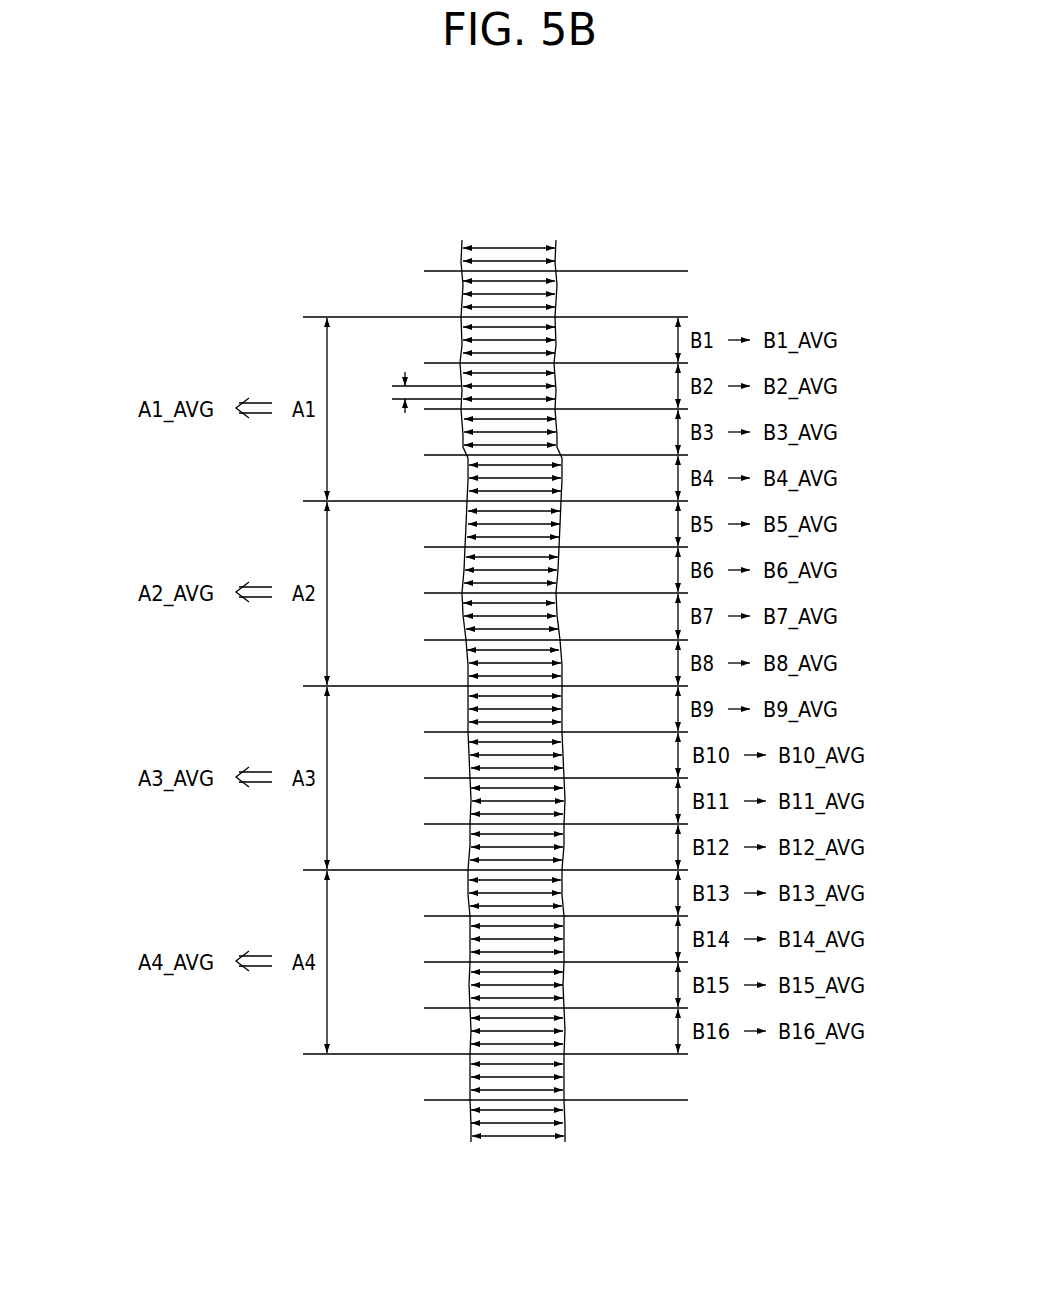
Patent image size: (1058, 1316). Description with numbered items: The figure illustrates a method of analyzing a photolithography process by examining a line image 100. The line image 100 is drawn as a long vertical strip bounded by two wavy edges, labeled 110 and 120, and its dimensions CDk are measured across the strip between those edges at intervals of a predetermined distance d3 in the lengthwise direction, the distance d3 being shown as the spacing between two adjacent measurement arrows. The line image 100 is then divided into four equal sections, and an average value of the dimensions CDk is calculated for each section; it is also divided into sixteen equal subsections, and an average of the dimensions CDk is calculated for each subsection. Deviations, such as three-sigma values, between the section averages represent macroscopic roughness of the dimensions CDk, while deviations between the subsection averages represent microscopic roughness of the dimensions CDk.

The line image 100 is at (525, 700).
The first edge of pattern 110 is at (472, 1158).
The second edge of pattern 120 is at (566, 1158).
The dimensions CDk is at (510, 239).
The predetermined distance d3 is at (413, 392).